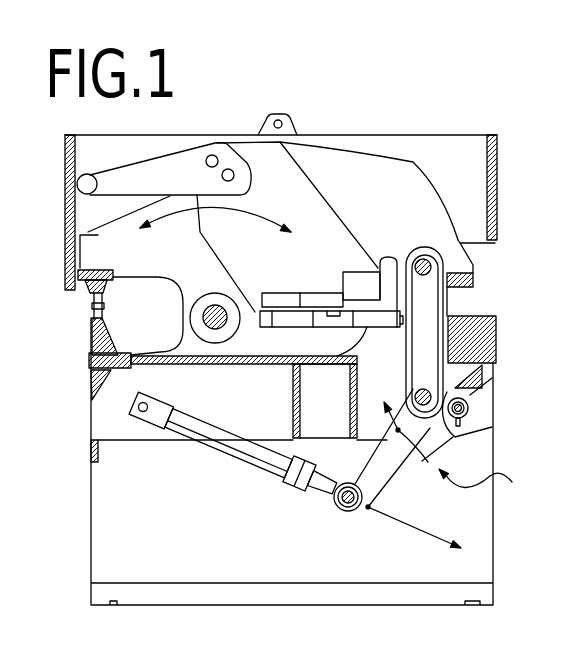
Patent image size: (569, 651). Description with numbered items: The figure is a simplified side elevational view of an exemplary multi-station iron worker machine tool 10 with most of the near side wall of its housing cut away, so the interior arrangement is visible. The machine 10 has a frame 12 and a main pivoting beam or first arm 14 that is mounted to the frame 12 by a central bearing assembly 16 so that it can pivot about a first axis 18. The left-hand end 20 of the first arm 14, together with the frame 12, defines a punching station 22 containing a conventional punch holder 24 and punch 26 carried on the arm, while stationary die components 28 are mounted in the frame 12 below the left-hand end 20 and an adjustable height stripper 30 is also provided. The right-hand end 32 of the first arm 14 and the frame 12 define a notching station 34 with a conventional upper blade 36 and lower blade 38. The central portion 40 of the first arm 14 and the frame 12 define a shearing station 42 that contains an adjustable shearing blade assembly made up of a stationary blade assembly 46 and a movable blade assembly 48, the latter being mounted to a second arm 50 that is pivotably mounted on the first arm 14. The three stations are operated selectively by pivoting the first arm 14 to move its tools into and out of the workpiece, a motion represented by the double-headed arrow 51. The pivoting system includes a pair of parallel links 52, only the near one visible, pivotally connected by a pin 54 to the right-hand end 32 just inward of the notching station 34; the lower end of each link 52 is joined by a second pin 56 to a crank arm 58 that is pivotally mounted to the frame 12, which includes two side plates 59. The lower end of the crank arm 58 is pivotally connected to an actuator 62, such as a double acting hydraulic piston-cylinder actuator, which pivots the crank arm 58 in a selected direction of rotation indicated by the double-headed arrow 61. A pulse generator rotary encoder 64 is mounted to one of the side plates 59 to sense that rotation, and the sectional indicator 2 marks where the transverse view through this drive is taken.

The section line of FIG. 2 is at (432, 376).
The iron worker machine tool 10 is at (394, 97).
The frame 12 is at (500, 156).
The first arm 14 is at (412, 170).
The central bearing assembly 16 is at (218, 302).
The first axis 18 is at (230, 307).
The left-hand end 20 is at (100, 240).
The punching station 22 is at (68, 312).
The punch holder 24 is at (103, 306).
The punch 26 is at (103, 312).
The stationary die components 28 is at (92, 321).
The adjustable height stripper 30 is at (94, 310).
The right-hand end 32 is at (433, 232).
The notching station 34 is at (484, 297).
The upper blade 36 is at (474, 282).
The lower blade 38 is at (490, 314).
The central portion 40 is at (325, 183).
The shearing station 42 is at (324, 286).
The stationary blade assembly 46 is at (239, 409).
The movable blade assembly 48 is at (350, 280).
The second arm 50 is at (318, 220).
The double-headed arrow 51 is at (195, 212).
The parallel links 52 is at (400, 368).
The pin 54 is at (421, 278).
The second pin 56 is at (423, 388).
The crank arm 58 is at (390, 482).
The side plates 59 is at (473, 428).
The double-headed arrow 61 is at (412, 453).
The actuator 62 is at (240, 460).
The pulse generator rotary encoder 64 is at (470, 399).